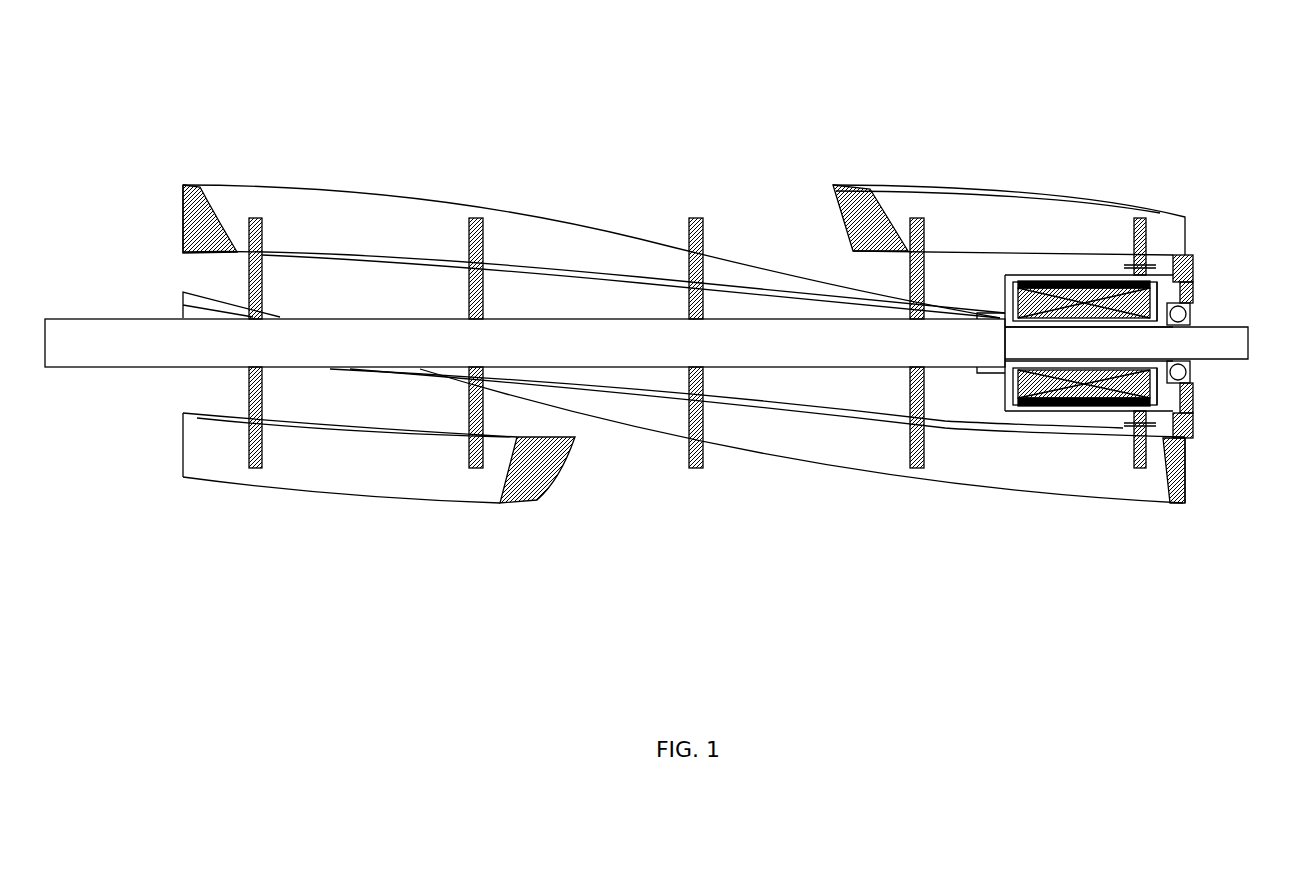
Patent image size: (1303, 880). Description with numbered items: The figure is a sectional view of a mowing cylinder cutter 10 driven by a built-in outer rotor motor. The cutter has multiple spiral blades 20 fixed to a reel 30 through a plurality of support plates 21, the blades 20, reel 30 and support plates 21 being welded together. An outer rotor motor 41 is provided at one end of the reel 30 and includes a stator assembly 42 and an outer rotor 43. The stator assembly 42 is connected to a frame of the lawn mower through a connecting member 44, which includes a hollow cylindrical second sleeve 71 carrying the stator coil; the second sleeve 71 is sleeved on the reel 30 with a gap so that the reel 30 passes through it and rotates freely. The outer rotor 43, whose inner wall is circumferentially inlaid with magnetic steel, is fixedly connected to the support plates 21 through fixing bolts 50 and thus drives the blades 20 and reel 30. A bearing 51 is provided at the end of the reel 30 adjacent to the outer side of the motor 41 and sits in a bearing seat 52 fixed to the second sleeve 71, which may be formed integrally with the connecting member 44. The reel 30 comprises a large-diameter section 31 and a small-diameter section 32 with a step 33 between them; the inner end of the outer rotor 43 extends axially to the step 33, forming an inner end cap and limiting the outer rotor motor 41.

The mowing cylinder cutter 10 is at (94, 109).
The blades 20 is at (355, 196).
The support plates 21 is at (478, 295).
The reel 30 is at (200, 353).
The large-diameter section 31 is at (898, 340).
The small-diameter section 32 is at (1070, 340).
The step 33 is at (1004, 300).
The outer rotor motor 41 is at (1103, 393).
The stator assembly 42 is at (1043, 385).
The outer rotor 43 is at (1103, 395).
The connecting member 44 is at (1193, 258).
The fixing bolts 50 is at (1143, 217).
The bearing 51 is at (1193, 370).
The bearing seat 52 is at (1192, 395).
The second sleeve 71 is at (1098, 312).